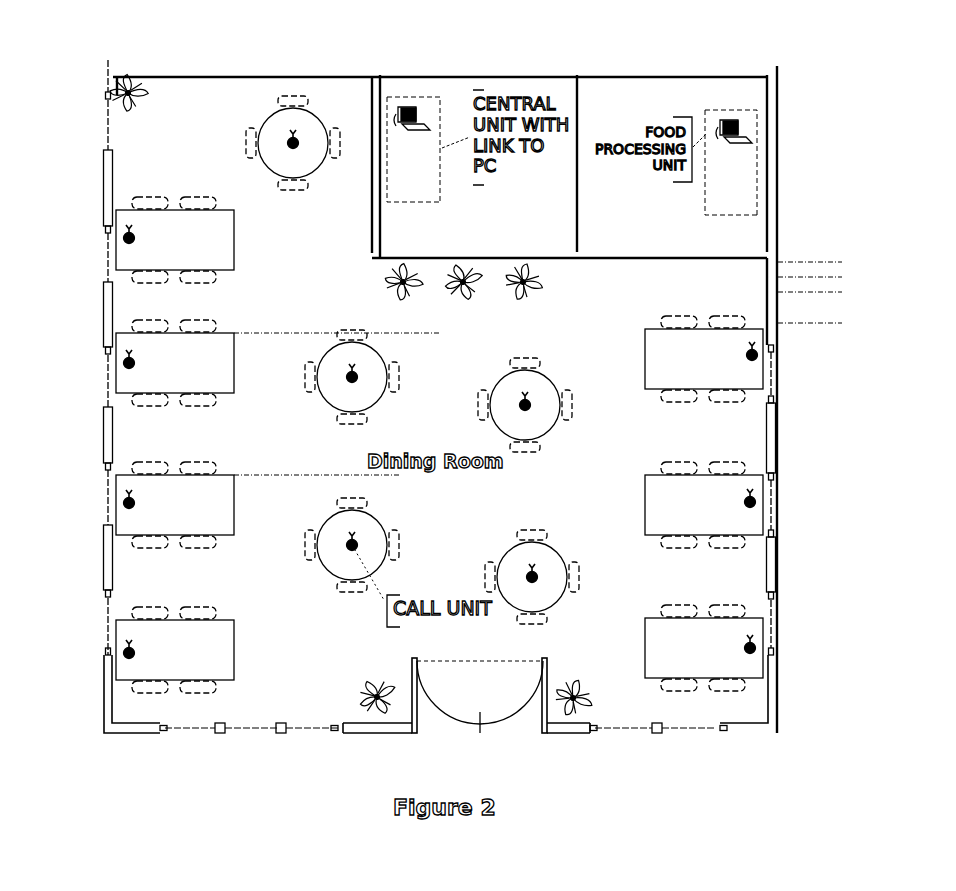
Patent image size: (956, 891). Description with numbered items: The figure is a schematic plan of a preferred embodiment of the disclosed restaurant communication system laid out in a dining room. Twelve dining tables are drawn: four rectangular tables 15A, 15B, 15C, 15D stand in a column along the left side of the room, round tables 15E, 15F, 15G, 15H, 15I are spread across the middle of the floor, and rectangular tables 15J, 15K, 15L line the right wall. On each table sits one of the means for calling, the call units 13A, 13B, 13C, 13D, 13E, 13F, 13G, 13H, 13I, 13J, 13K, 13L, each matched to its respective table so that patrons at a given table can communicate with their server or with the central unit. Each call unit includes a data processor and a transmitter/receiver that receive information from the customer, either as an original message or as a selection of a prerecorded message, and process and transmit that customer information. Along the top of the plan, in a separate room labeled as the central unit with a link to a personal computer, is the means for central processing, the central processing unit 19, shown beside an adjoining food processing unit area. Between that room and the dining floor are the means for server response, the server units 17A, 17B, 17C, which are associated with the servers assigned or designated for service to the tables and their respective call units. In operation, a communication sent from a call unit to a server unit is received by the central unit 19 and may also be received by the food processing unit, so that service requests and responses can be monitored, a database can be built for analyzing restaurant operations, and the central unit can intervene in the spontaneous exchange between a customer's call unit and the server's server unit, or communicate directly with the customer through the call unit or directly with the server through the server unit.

The central processing unit 19 is at (425, 97).
The dining table 15A is at (236, 250).
The dining table 15B is at (236, 362).
The dining table 15C is at (236, 504).
The dining table 15D is at (236, 644).
The dining table 15E is at (385, 526).
The dining table 15F is at (385, 406).
The dining table 15G is at (322, 118).
The dining table 15H is at (553, 382).
The dining table 15I is at (555, 550).
The dining table 15J is at (645, 650).
The dining table 15K is at (645, 505).
The dining table 15L is at (645, 343).
The call unit 13A is at (126, 237).
The call unit 13B is at (126, 362).
The call unit 13C is at (126, 503).
The call unit 13D is at (126, 653).
The call unit 13E is at (349, 548).
The call unit 13F is at (349, 380).
The call unit 13G is at (288, 145).
The call unit 13H is at (528, 407).
The call unit 13I is at (536, 578).
The call unit 13J is at (755, 650).
The call unit 13K is at (755, 504).
The call unit 13L is at (757, 357).
The server unit 17A is at (412, 295).
The server unit 17B is at (470, 296).
The server unit 17C is at (528, 296).